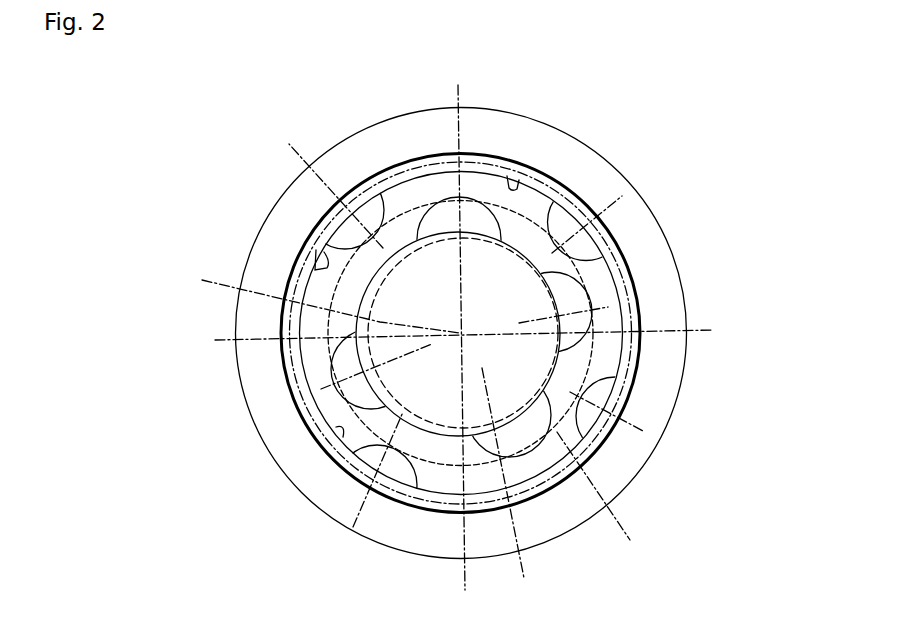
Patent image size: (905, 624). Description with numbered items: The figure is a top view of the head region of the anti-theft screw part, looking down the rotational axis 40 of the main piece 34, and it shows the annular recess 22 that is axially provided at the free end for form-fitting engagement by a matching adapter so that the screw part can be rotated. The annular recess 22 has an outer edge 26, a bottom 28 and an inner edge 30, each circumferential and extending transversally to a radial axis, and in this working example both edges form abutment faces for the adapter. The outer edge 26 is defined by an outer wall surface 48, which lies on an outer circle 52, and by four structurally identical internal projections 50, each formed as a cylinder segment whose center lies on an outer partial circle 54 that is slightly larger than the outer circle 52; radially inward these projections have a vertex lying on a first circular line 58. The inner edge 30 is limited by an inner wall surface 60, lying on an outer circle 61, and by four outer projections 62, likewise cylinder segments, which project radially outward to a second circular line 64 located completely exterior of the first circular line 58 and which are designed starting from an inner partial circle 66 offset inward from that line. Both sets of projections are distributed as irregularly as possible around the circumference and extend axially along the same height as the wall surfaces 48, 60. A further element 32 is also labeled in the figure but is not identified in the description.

The annular recess 22 is at (413, 193).
The outer edge 26 is at (318, 249).
The bottom 28 is at (572, 383).
The inner edge 30 is at (470, 443).
The housing 32 is at (270, 410).
The main piece 34 is at (503, 138).
The rotational axis 40 is at (436, 324).
The outer wall surface 48 is at (343, 433).
The internal projections 50 is at (580, 243).
The outer circle 52 is at (515, 178).
The outer partial circle 54 is at (326, 173).
The first circular line 58 is at (509, 484).
The inner wall surface 60 is at (540, 270).
The outer circle 61 is at (408, 427).
The outer projections 62 is at (343, 372).
The second circular line 64 is at (606, 504).
The inner partial circle 66 is at (530, 366).